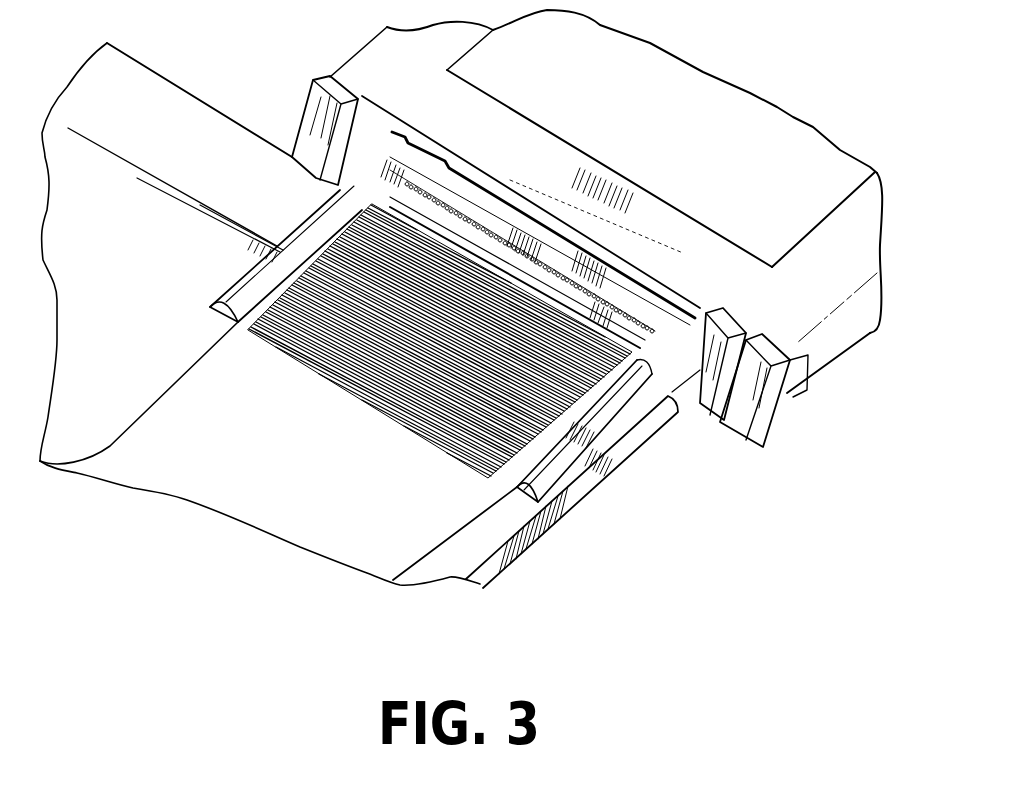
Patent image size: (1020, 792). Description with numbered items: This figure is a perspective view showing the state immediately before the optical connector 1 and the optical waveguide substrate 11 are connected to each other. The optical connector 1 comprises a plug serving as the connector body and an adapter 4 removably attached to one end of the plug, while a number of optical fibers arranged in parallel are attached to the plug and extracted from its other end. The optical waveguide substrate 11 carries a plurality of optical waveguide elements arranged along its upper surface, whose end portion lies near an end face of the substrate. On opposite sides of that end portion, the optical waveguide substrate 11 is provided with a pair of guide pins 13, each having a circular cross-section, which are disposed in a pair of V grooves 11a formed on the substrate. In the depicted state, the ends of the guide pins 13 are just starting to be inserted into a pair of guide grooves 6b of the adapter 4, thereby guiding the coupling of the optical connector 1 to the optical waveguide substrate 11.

The optical connector 1 is at (853, 357).
The adapter 4 is at (717, 407).
The guide grooves 6b is at (413, 143).
The optical waveguide substrate 11 is at (557, 535).
The V grooves 11a is at (221, 323).
The guide pins 13 is at (345, 100).